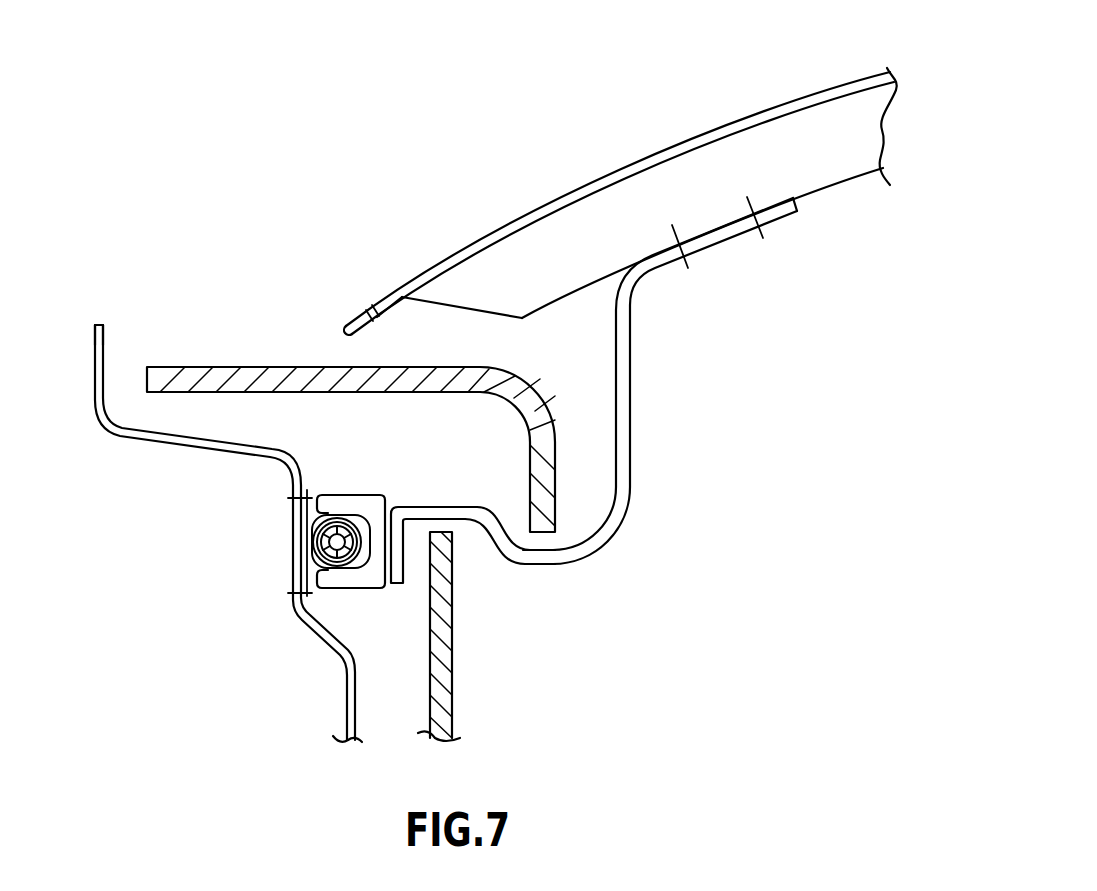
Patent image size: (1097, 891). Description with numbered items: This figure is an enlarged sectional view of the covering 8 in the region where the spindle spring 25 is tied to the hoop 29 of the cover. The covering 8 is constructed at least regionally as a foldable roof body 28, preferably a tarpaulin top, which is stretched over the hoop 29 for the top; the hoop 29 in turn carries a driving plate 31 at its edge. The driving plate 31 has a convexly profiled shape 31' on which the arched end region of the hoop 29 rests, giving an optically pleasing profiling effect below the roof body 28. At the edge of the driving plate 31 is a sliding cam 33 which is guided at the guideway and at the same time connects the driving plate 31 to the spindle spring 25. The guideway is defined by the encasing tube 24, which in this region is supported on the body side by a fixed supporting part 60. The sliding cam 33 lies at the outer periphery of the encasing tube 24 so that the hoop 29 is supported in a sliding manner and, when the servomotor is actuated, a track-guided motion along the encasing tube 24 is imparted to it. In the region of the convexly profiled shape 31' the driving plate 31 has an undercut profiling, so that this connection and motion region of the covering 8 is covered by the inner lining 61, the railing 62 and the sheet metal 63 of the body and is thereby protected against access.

The covering 8 is at (696, 100).
The roof body 28 is at (583, 174).
The hoop for the top 29 is at (847, 190).
The driving plate 31 is at (594, 399).
The convexly profiled shape 31' is at (538, 603).
The railing 62 is at (260, 372).
The inner lining 61 is at (443, 698).
The fixed supporting part 60 is at (295, 514).
The sheet metal 63 is at (105, 362).
The sliding cam 33 is at (368, 588).
The spindle spring 25 is at (290, 546).
The encasing tube 24 is at (318, 556).